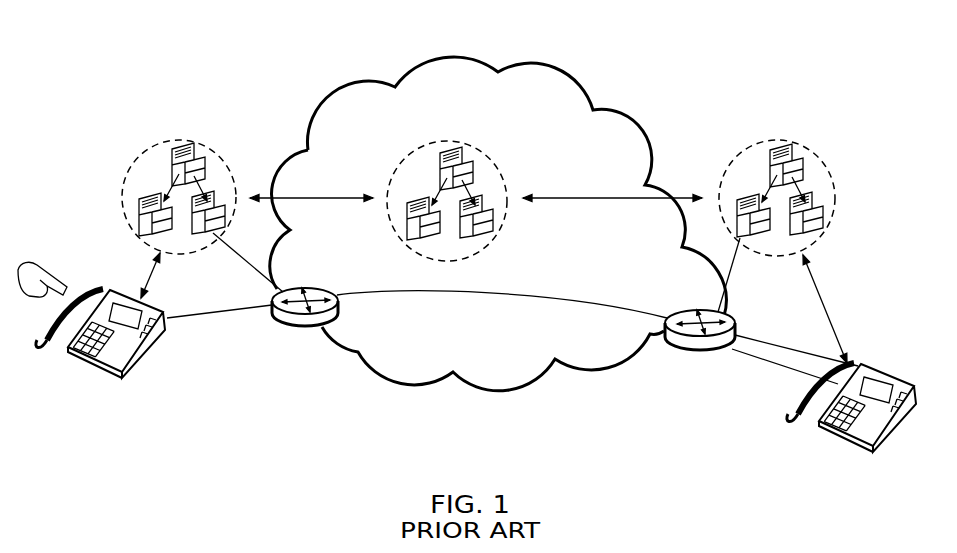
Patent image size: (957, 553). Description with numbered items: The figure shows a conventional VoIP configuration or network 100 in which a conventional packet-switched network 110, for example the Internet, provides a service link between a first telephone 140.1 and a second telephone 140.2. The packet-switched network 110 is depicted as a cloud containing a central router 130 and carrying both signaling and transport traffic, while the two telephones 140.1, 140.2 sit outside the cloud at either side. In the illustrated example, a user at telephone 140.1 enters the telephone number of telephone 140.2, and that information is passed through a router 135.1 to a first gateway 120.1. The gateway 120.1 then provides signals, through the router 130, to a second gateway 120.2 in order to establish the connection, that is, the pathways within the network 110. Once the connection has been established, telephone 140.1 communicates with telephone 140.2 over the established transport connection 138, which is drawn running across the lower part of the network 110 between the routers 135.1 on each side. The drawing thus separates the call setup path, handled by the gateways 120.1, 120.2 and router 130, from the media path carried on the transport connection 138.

The VoIP configuration or network 100 is at (658, 47).
The packet-switched network 110 is at (483, 62).
The gateway 120.1 is at (172, 140).
The gateway 120.2 is at (770, 140).
The router 130 is at (442, 140).
The router 135.1 is at (287, 331).
The transport connection 138 is at (377, 292).
The telephone 140.1 is at (100, 371).
The telephone 140.2 is at (840, 434).